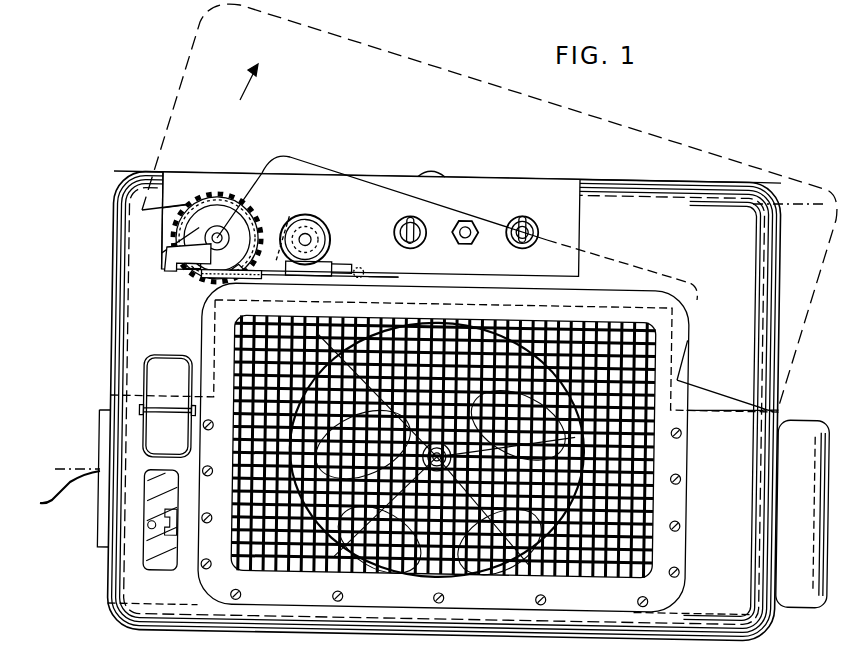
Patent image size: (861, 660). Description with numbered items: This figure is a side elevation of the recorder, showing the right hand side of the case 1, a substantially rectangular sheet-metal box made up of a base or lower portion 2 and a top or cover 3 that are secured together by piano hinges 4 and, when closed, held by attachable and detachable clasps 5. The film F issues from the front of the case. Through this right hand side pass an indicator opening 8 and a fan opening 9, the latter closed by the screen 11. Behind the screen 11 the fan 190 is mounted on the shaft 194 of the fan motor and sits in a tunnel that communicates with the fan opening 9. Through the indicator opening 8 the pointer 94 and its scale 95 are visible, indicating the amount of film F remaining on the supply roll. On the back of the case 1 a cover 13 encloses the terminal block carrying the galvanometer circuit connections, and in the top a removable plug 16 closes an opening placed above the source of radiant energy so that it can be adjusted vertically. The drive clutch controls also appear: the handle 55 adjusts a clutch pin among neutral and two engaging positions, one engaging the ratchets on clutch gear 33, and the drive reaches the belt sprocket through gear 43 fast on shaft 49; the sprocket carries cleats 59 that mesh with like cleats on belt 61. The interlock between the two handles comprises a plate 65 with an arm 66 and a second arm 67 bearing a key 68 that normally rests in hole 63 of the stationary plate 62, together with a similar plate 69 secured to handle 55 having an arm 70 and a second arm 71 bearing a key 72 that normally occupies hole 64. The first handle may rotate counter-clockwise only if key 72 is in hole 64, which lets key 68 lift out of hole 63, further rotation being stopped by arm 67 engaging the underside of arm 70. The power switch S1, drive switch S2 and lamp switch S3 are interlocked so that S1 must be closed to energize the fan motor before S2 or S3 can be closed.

The case 1 is at (114, 144).
The base or lower portion 2 is at (121, 596).
The top or cover 3 is at (122, 306).
The piano hinges 4 is at (806, 204).
The clasps 5 is at (170, 356).
The indicator opening 8 is at (150, 525).
The fan opening 9 is at (407, 556).
The screen 11 is at (281, 548).
The cover 13 is at (800, 422).
The removable plug 16 is at (433, 170).
The clutch gear 33 is at (316, 224).
The gear 43 is at (163, 238).
The shaft 49 is at (236, 238).
The handle 55 is at (329, 231).
The cleats 59 is at (230, 214).
The belt 61 is at (200, 216).
The stationary plate 62 is at (212, 208).
The hole 63 is at (263, 278).
The hole 64 is at (378, 268).
The plate 65 is at (158, 250).
The arm 66 is at (170, 268).
The second arm 67 is at (196, 270).
The key 68 is at (236, 276).
The plate 69 is at (338, 236).
The arm 70 is at (289, 227).
The second arm 71 is at (336, 261).
The key 72 is at (358, 266).
The pointer 94 is at (152, 538).
The scale 95 is at (152, 507).
The fan 190 is at (652, 508).
The shaft 194 is at (482, 325).
The power switch S1 is at (421, 243).
The drive switch S2 is at (533, 243).
The lamp switch S3 is at (475, 246).
The film F is at (70, 479).